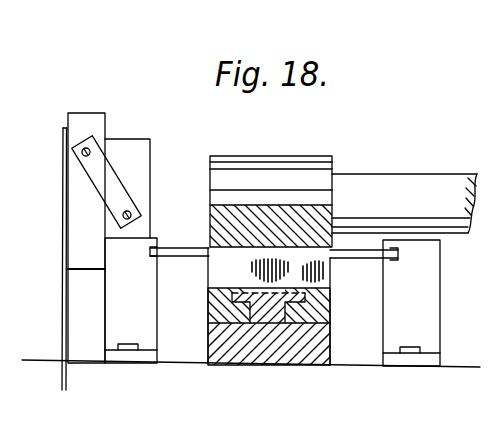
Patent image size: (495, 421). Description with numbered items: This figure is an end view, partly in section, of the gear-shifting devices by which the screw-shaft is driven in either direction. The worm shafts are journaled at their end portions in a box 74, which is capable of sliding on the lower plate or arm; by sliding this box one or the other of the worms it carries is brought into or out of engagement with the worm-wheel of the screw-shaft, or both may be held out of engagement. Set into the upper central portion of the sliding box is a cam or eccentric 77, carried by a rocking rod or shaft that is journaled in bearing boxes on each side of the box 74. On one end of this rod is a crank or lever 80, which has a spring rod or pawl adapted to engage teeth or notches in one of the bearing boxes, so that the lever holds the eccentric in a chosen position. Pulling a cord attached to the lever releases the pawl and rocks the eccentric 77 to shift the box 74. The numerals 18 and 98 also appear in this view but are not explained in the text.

The rod 18 is at (62, 268).
The box 74 is at (210, 225).
The cam or eccentric 77 is at (271, 306).
The crank or lever 80 is at (86, 182).
The arm 98 is at (404, 203).